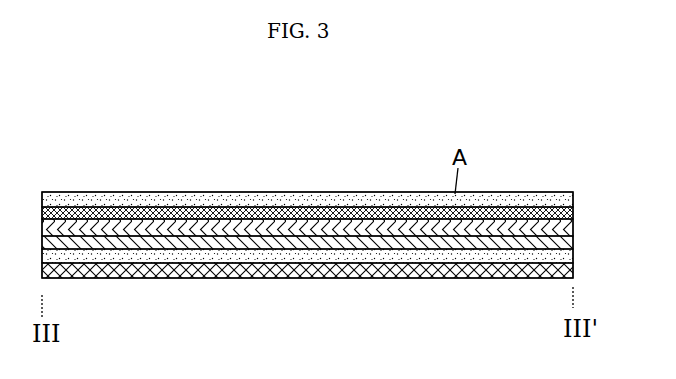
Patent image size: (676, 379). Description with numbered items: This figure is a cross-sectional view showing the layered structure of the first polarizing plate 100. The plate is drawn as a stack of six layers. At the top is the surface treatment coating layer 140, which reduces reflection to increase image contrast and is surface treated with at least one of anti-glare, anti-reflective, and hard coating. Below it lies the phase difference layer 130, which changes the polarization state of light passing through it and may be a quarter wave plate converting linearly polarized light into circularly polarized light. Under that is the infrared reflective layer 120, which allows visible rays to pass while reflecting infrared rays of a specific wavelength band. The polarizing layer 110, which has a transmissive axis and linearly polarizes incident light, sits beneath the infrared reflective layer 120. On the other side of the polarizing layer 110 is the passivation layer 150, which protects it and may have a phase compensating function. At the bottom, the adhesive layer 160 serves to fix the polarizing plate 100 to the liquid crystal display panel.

The first polarizing plate 100 is at (340, 99).
The polarizing layer 110 is at (573, 239).
The infrared reflective layer 120 is at (573, 222).
The phase difference layer 130 is at (573, 206).
The surface treatment coating layer 140 is at (573, 193).
The passivation layer 150 is at (573, 250).
The adhesive layer 160 is at (573, 266).